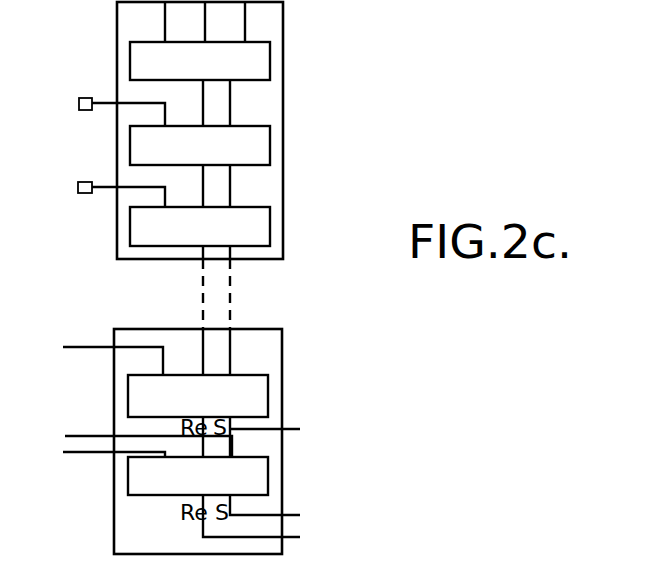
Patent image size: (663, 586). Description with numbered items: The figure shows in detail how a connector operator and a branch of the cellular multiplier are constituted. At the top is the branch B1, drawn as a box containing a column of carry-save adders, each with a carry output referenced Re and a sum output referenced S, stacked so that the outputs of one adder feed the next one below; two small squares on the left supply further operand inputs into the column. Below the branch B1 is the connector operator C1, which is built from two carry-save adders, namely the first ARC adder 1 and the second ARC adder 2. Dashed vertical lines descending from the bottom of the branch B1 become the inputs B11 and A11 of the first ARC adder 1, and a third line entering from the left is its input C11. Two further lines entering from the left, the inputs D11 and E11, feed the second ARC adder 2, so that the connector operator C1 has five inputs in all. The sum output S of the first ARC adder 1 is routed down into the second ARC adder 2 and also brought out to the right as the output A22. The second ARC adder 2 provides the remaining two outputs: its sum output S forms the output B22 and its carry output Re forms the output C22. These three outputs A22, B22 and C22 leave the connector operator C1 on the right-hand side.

The branch B1 is at (283, 183).
The input B11 is at (182, 317).
The input A11 is at (253, 317).
The connector operator C1 is at (282, 377).
The first ARC adder 1 is at (237, 378).
The second ARC adder 2 is at (155, 488).
The input C11 is at (94, 350).
The input D11 is at (128, 433).
The input E11 is at (95, 459).
The output A22 is at (292, 429).
The output B22 is at (290, 512).
The output C22 is at (279, 529).